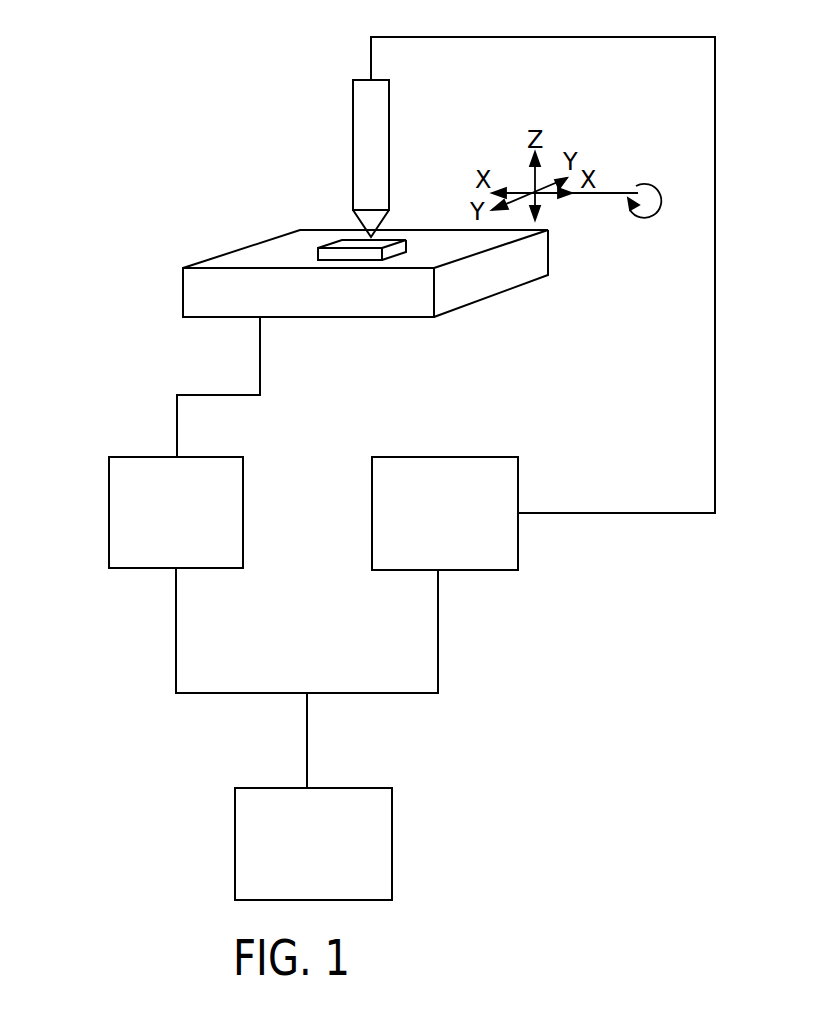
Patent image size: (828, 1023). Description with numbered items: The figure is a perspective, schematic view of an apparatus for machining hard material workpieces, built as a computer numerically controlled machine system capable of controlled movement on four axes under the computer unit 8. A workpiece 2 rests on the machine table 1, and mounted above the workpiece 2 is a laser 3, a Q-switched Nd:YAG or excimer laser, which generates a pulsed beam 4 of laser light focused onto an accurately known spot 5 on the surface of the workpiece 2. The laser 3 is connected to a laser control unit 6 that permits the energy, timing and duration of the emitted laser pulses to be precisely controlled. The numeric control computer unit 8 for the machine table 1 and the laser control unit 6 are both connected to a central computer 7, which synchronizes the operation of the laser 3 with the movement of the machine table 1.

The machine table 1 is at (277, 252).
The workpiece 2 is at (353, 243).
The laser 3 is at (358, 141).
The pulsed beam 4 is at (378, 215).
The spot 5 is at (378, 235).
The laser control unit 6 is at (472, 560).
The central computer 7 is at (378, 877).
The computer unit 8 is at (142, 562).